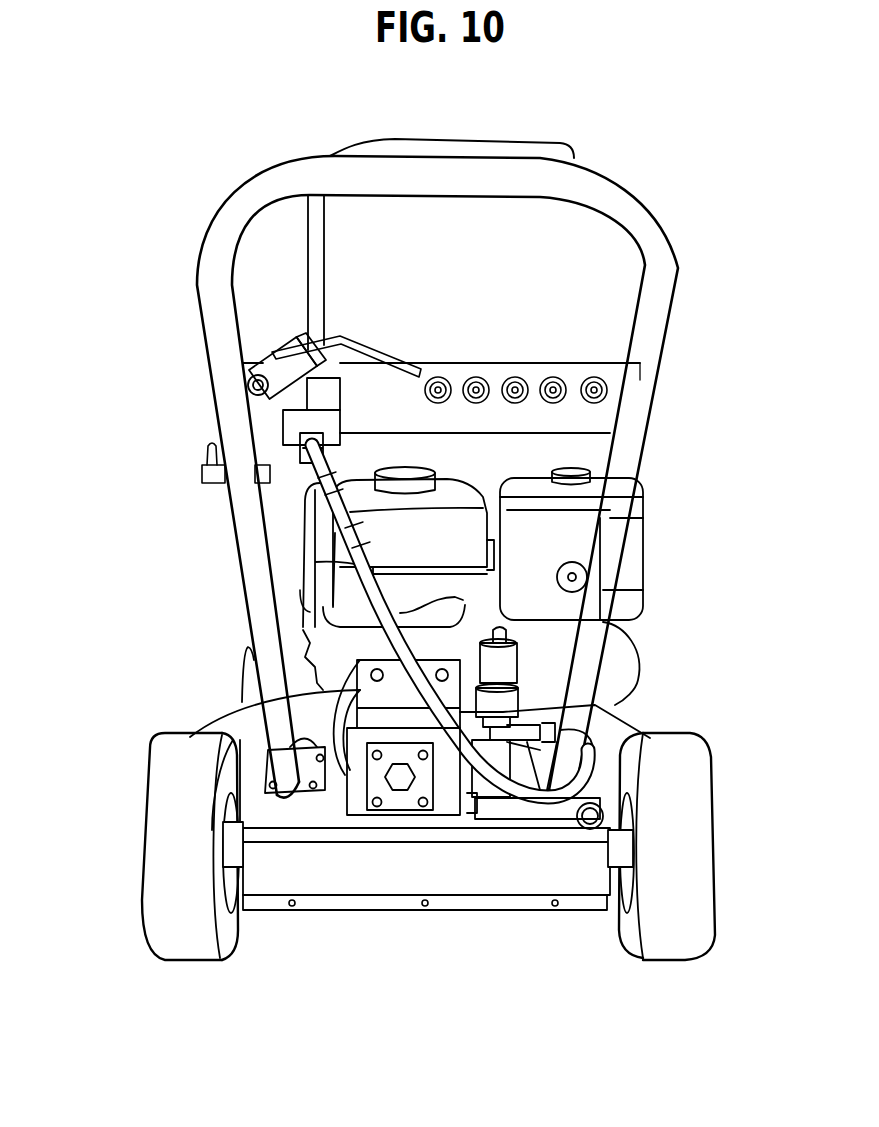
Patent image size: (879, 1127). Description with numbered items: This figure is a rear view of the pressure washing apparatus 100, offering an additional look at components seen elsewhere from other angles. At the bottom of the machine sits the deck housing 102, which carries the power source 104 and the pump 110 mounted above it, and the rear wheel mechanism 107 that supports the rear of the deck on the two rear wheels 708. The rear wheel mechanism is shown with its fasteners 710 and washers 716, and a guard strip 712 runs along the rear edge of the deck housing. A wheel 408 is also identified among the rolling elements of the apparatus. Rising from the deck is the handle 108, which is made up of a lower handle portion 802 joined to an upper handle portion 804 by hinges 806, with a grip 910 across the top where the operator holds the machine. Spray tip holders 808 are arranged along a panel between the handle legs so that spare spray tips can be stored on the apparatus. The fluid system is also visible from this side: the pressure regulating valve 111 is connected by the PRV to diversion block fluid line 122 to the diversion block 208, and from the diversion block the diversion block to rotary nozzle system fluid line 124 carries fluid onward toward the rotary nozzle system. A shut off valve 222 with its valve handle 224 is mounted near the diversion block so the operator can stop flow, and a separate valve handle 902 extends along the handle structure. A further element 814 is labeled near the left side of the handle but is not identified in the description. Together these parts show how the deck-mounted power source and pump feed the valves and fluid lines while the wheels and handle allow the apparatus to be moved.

The pressure washing apparatus 100 is at (186, 195).
The deck housing 102 is at (220, 720).
The power source 104 is at (643, 513).
The rear wheel mechanism 107 is at (282, 863).
The handle 108 is at (672, 335).
The pump 110 is at (403, 793).
The pressure regulating valve 111 is at (503, 673).
The PRV to diversion block fluid line 122 is at (330, 578).
The diversion block to rotary nozzle system fluid line 124 is at (305, 603).
The diversion block 208 is at (287, 425).
The shut off valve 222 is at (247, 365).
The valve handle 224 is at (350, 338).
The wheel 408 is at (250, 685).
The rear wheels 708 is at (147, 787).
The fasteners 710 is at (555, 907).
The guard strip 712 is at (592, 912).
The washers 716 is at (622, 852).
The lower handle portion 802 is at (632, 635).
The upper handle portion 804 is at (678, 247).
The hinges 806 is at (610, 583).
The spray tip holders 808 is at (472, 378).
The switch 814 is at (202, 470).
The valve handle 902 is at (322, 243).
The grip 910 is at (566, 147).